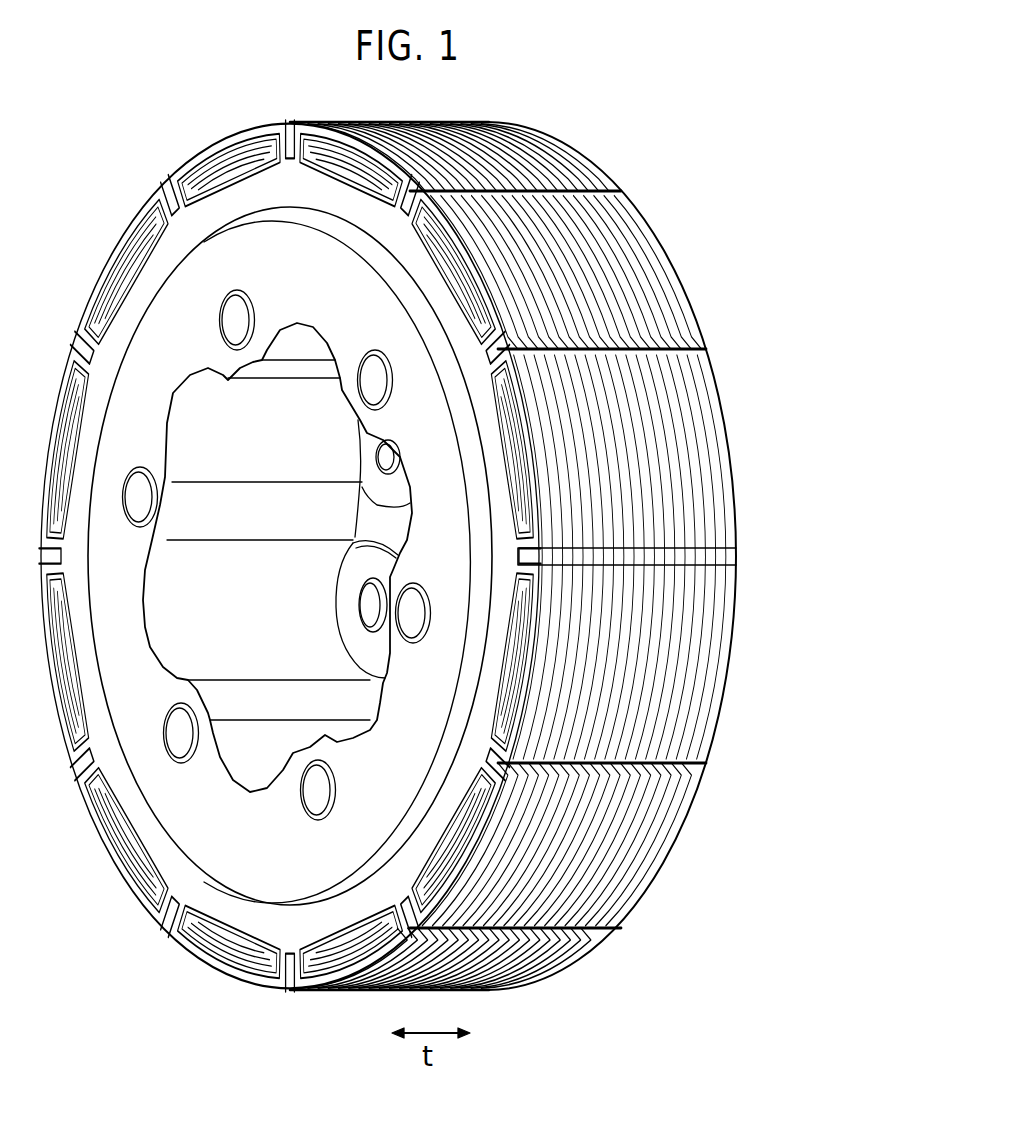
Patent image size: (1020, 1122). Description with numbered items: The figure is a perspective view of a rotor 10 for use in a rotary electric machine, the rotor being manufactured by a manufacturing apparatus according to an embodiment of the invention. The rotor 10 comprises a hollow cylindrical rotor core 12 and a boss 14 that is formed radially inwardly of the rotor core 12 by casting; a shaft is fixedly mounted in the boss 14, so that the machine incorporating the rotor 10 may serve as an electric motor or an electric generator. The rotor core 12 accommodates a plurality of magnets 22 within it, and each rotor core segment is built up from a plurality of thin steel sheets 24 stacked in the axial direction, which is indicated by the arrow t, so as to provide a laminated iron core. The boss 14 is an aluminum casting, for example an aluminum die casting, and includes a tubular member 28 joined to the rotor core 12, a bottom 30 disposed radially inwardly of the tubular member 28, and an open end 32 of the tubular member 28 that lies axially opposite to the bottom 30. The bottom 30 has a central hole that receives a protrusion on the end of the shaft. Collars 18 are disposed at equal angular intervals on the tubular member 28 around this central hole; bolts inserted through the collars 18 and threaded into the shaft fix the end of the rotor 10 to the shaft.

The rotor 10 is at (161, 85).
The rotor core 12 is at (118, 231).
The boss 14 is at (147, 349).
The collar 18 is at (375, 470).
The magnet 22 is at (243, 177).
The thin steel sheet 24 is at (608, 226).
The tubular member 28 is at (210, 833).
The bottom 30 is at (395, 530).
The open end 32 is at (170, 628).